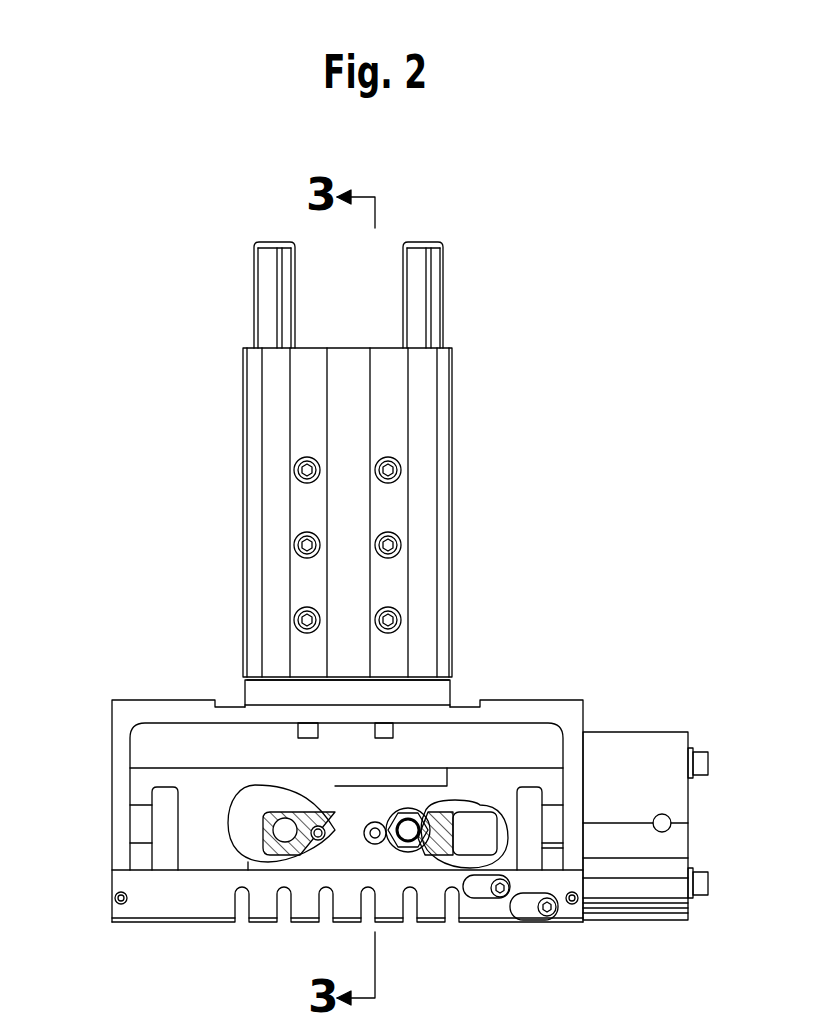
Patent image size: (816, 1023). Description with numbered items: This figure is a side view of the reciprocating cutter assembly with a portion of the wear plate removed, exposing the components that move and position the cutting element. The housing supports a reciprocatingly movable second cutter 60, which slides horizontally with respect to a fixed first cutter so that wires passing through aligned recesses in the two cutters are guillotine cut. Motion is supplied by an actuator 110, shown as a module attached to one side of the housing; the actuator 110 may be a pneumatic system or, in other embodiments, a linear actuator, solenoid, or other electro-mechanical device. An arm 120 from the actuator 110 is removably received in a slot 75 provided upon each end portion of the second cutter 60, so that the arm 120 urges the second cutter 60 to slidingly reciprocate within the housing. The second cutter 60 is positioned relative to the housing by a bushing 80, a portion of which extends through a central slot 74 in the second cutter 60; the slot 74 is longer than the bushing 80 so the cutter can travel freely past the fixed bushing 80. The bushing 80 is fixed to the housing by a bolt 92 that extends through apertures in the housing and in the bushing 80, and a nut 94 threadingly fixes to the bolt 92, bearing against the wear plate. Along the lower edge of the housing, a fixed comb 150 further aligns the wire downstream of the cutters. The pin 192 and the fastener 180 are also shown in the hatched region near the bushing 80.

The second cutter 60 is at (242, 809).
The bushing 80 is at (273, 815).
The slot 75 is at (165, 798).
The arm 120 is at (563, 825).
The actuator 110 is at (673, 797).
The fixed comb 150 is at (157, 900).
The pivot pin 192 is at (285, 838).
The fastener 180 is at (318, 841).
The nut 94 is at (390, 845).
The bolt 92 is at (398, 848).
The central slot 74 is at (477, 835).